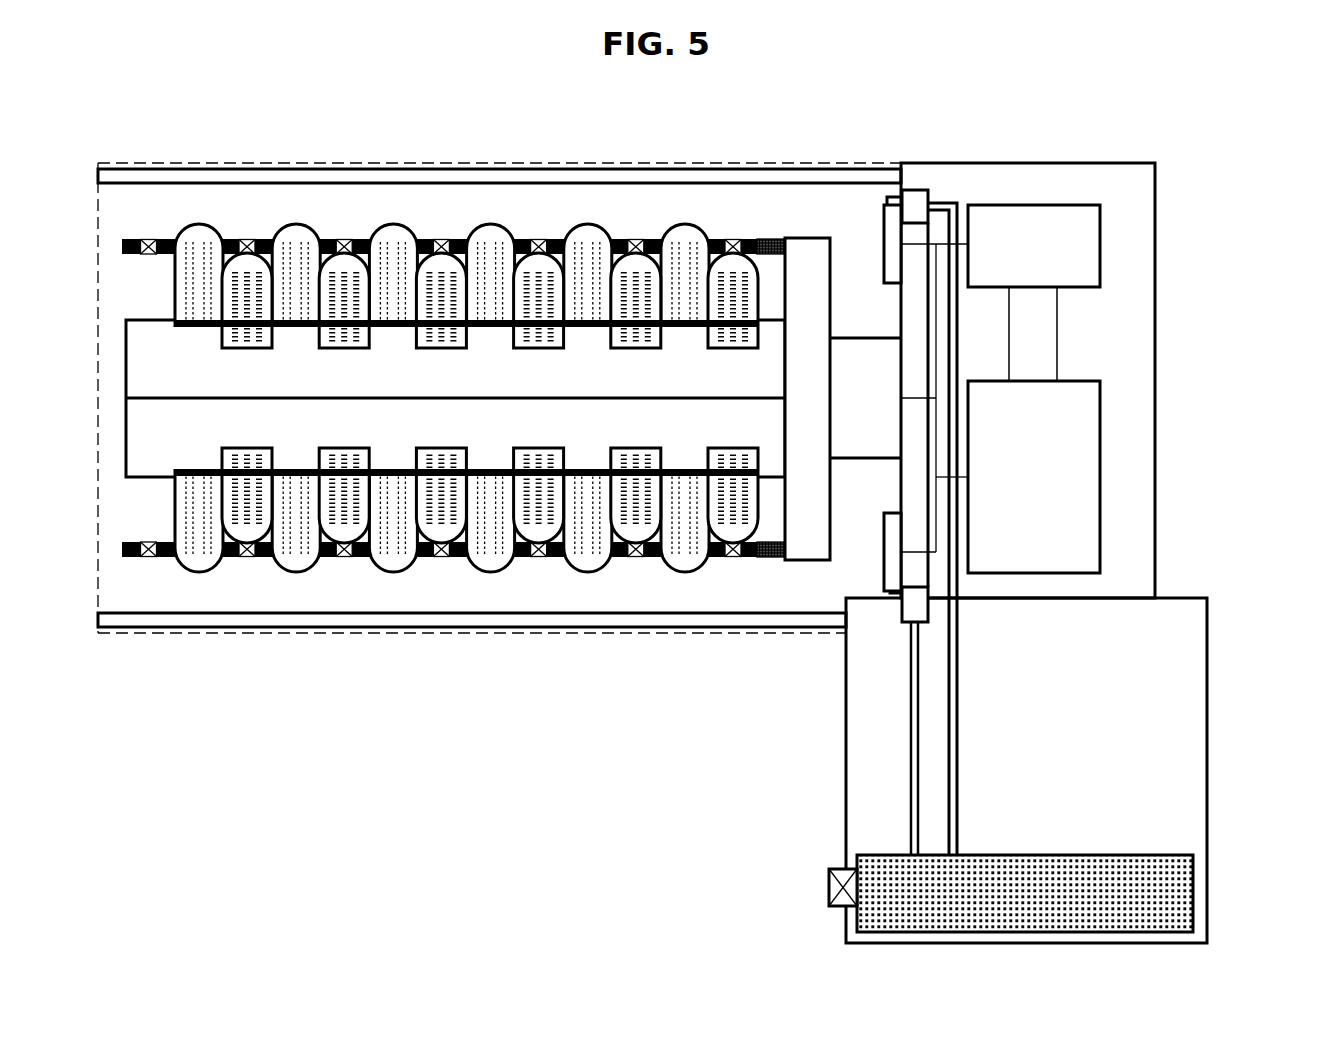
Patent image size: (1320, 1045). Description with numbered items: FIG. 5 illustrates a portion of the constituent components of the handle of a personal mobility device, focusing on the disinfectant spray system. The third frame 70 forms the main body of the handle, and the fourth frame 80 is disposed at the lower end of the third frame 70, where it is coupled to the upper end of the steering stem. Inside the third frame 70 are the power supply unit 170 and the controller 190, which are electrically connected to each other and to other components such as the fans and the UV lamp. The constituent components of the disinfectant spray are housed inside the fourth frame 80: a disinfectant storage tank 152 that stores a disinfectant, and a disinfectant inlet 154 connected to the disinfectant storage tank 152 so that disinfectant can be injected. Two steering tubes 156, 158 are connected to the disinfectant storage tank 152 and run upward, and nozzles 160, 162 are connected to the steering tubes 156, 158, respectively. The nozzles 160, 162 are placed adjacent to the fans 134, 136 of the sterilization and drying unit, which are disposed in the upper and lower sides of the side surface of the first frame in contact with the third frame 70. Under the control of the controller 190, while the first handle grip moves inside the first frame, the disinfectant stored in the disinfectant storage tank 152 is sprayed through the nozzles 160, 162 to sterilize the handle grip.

The third frame 70 is at (1042, 162).
The fourth frame 80 is at (1185, 597).
The fan 134 is at (893, 243).
The fan 136 is at (888, 556).
The disinfectant storage tank 152 is at (1175, 895).
The disinfectant inlet 154 is at (829, 890).
The steering tube 156 is at (911, 753).
The steering tube 158 is at (957, 752).
The nozzle 160 is at (908, 618).
The nozzle 162 is at (921, 200).
The power supply unit 170 is at (1034, 246).
The controller 190 is at (1034, 477).